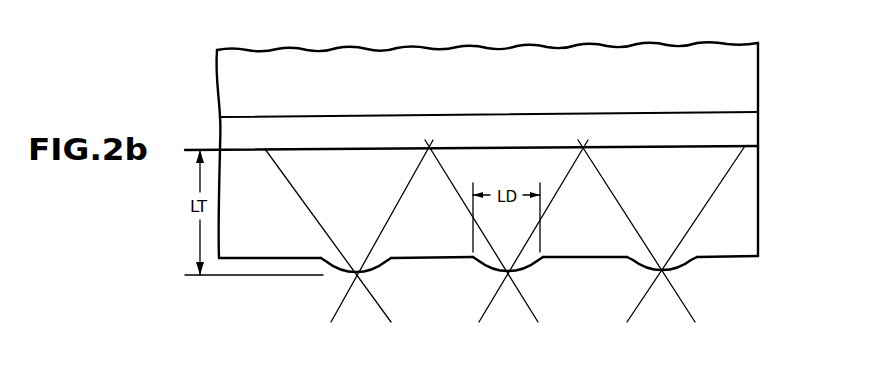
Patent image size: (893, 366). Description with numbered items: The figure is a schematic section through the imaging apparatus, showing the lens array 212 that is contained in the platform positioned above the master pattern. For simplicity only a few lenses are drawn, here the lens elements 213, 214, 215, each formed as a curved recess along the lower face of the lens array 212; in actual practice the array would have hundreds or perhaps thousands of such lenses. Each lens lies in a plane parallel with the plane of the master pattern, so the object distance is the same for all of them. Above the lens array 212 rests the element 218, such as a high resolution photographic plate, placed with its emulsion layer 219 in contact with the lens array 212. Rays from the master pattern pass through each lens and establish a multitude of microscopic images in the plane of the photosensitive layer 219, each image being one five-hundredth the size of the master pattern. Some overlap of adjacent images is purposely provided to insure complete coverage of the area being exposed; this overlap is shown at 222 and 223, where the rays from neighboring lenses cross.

The element 218 is at (413, 60).
The emulsion layer 219 is at (230, 129).
The lens array 212 is at (228, 237).
The lens element 213 is at (342, 266).
The lens element 214 is at (497, 265).
The lens element 215 is at (647, 264).
The overlap 222 is at (428, 150).
The overlap 223 is at (583, 151).